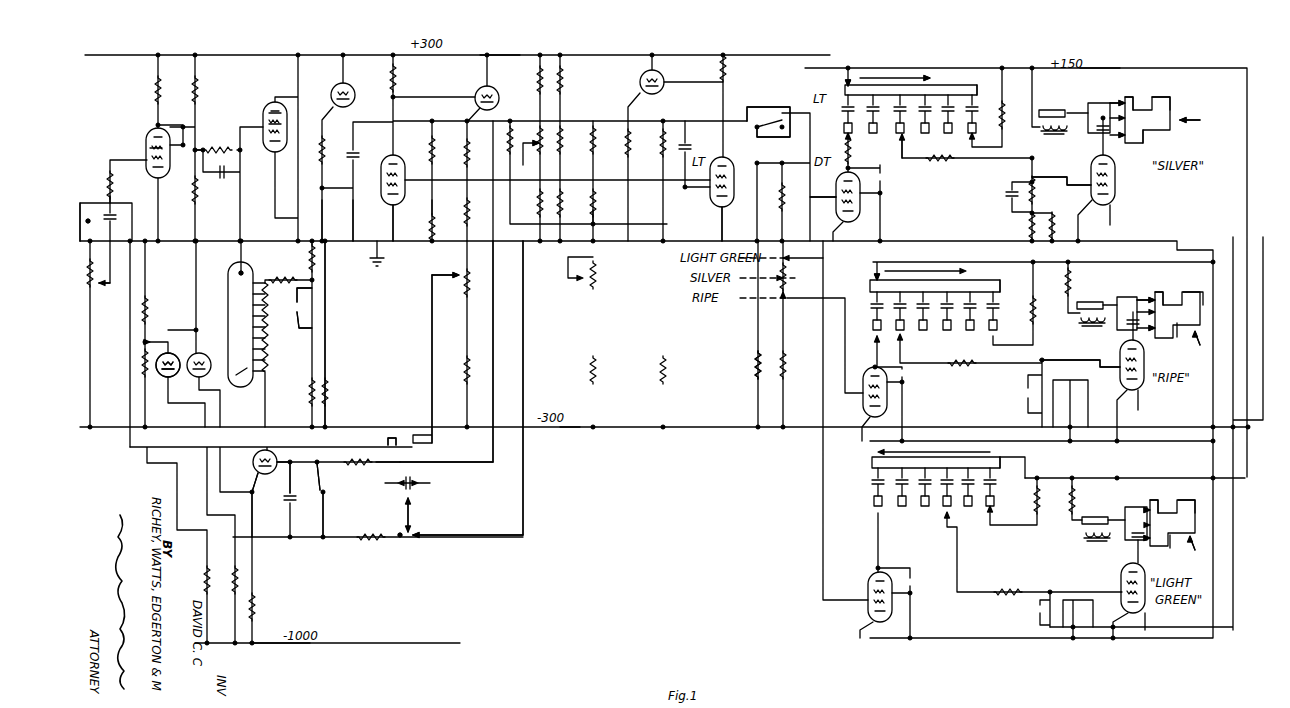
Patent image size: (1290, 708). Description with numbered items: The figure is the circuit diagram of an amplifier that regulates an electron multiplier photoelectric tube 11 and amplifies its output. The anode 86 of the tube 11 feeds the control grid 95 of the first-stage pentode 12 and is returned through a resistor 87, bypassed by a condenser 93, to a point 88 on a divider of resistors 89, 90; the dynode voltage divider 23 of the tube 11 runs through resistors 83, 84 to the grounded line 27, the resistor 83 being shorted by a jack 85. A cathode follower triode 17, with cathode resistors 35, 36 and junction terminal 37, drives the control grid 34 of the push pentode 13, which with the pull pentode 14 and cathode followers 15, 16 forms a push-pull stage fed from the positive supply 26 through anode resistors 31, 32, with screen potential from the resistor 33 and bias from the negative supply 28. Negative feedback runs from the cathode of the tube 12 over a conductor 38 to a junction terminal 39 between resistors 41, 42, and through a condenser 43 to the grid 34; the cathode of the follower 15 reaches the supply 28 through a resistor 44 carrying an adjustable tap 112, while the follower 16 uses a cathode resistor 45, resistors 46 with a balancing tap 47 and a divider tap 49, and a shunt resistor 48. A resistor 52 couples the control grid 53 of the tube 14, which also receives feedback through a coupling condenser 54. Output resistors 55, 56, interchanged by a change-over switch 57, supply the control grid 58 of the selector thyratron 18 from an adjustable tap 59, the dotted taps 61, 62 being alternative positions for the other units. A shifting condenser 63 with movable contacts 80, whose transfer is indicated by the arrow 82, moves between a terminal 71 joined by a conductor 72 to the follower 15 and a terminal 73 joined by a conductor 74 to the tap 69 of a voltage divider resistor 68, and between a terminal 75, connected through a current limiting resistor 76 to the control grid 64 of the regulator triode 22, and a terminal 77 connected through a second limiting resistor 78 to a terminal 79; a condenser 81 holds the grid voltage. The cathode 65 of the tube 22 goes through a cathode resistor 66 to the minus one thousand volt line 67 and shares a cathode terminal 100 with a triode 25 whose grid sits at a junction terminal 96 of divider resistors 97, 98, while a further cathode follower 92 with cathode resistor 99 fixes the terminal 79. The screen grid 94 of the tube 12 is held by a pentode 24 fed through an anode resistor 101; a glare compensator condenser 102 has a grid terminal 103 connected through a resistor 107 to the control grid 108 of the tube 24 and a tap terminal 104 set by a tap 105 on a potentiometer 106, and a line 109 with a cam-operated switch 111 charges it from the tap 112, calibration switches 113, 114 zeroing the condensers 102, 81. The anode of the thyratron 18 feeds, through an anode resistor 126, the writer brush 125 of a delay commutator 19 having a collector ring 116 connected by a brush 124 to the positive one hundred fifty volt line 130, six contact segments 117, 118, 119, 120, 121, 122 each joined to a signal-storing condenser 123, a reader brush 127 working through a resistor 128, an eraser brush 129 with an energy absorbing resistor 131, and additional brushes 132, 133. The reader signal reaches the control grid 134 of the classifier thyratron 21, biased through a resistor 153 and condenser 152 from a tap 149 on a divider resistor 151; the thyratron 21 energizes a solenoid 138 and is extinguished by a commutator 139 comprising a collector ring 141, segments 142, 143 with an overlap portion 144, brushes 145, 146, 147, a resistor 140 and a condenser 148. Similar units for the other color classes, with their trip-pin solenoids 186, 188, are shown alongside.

The electron multiplier photoelectric tube 11 is at (227, 292).
The pentode tube 12 is at (268, 101).
The pentode tube 13 is at (400, 158).
The pentode tube 14 is at (720, 157).
The cathode follower triode 15 is at (495, 91).
The cathode follower triode 16 is at (640, 82).
The cathode follower triode 17 is at (347, 86).
The selector thyratron 18 is at (837, 183).
The commutator 19 is at (907, 78).
The classifier thyratron 21 is at (1092, 168).
The triode vacuum tube 22 is at (253, 462).
The resistor 23 is at (265, 342).
The pentode 24 is at (146, 129).
The triode 25 is at (201, 357).
The positive voltage supply 26 is at (500, 55).
The grounded line 27 is at (325, 254).
The negative supply 28 is at (569, 427).
The anode resistor 31 is at (397, 77).
The anode resistor 32 is at (719, 69).
The resistor 33 is at (562, 150).
The control grid 34 is at (399, 198).
The cathode resistor 35 is at (323, 162).
The cathode resistor 36 is at (331, 388).
The junction terminal 37 is at (326, 198).
The conductor 38 is at (352, 200).
The junction terminal 39 is at (432, 214).
The resistor 41 is at (465, 155).
The resistor 42 is at (436, 228).
The condenser 43 is at (351, 150).
The cathode resistor 44 is at (432, 149).
The cathode resistor 45 is at (624, 145).
The resistors 46 is at (590, 140).
The tap 47 is at (580, 284).
The resistor 48 is at (660, 146).
The voltage divider tap 49 is at (595, 222).
The resistor 52 is at (512, 140).
The control grid 53 is at (725, 205).
The coupling condenser 54 is at (684, 142).
The output resistor 55 is at (758, 334).
The output resistor 56 is at (780, 197).
The change over switch 57 is at (774, 107).
The control grid 58 is at (833, 199).
The adjustable tap 59 is at (785, 278).
The tap 61 is at (800, 259).
The tap 62 is at (787, 298).
The shifting condenser 63 is at (410, 476).
The control grid 64 is at (280, 460).
The cathode 65 is at (270, 481).
The cathode resistor 66 is at (257, 611).
The negative supply line 67 is at (272, 644).
The voltage divider resistor 68 is at (542, 150).
The adjustable tap 69 is at (532, 150).
The terminal 71 is at (418, 464).
The conductor 72 is at (493, 453).
The terminal 73 is at (418, 532).
The conductor 74 is at (523, 470).
The terminal 75 is at (392, 462).
The current limiting resistor 76 is at (358, 459).
The terminal 77 is at (400, 537).
The voltage limiting resistor 78 is at (375, 532).
The terminal 79 is at (248, 523).
The movable contacts 80 is at (407, 486).
The condenser 81 is at (290, 504).
The arrow 82 is at (411, 514).
The resistor 83 is at (297, 278).
The resistor 84 is at (308, 258).
The jack 85 is at (298, 317).
The anode 86 is at (236, 270).
The resistor 87 is at (224, 145).
The point 88 is at (195, 154).
The resistor 89 is at (194, 88).
The resistor 90 is at (193, 192).
The cathode-follower tube 92 is at (172, 377).
The by-pass condenser 93 is at (222, 178).
The screen grid 94 is at (263, 112).
The control grid 95 is at (263, 125).
The junction terminal 96 is at (143, 342).
The voltage-divider resistor 97 is at (147, 308).
The voltage-divider resistor 98 is at (146, 373).
The cathode resistor 99 is at (230, 592).
The cathode terminal 100 is at (251, 491).
The anode resistor 101 is at (156, 87).
The glare compensator condenser 102 is at (114, 220).
The grid terminal 103 is at (111, 195).
The tap terminal 104 is at (88, 222).
The tap 105 is at (97, 277).
The potentiometer 106 is at (92, 288).
The current-limiting resistor 107 is at (112, 180).
The control grid 108 is at (148, 148).
The line 109 is at (430, 354).
The cam-operated switch 111 is at (385, 438).
The adjustable tap 112 is at (462, 284).
The switch 113 is at (83, 203).
The switch 114 is at (325, 487).
The collector ring 116 is at (940, 85).
The contact segment 117 is at (872, 300).
The contact segment 118 is at (896, 300).
The contact segment 119 is at (921, 300).
The contact segment 120 is at (945, 300).
The contact segment 121 is at (968, 300).
The contact segment 122 is at (992, 300).
The signal-storing condensers 123 is at (982, 106).
The contact brush 124 is at (848, 84).
The writer brush 125 is at (847, 135).
The anode resistor 126 is at (847, 151).
The reader brush 127 is at (902, 156).
The resistor 128 is at (939, 159).
The discharge brush 129 is at (975, 135).
The positive supply line 130 is at (1094, 68).
The energy absorbing resistor 131 is at (1010, 128).
The brush 132 is at (903, 340).
The brush 133 is at (948, 521).
The control grid 134 is at (1115, 184).
The solenoid device 138 is at (1049, 110).
The commutator 139 is at (1168, 131).
The resistor 140 is at (1112, 103).
The collector ring 141 is at (1162, 321).
The segment 142 is at (1143, 143).
The segment 143 is at (1161, 97).
The overlap portion 144 is at (1129, 97).
The brush 145 is at (1118, 321).
The brush 146 is at (1121, 137).
The brush 147 is at (1124, 102).
The condenser 148 is at (1103, 136).
The tap 149 is at (1035, 214).
The voltage divider resistor 151 is at (1052, 226).
The condenser 152 is at (1008, 194).
The resistor 153 is at (1035, 188).
The trip-pin solenoid 186 is at (1084, 300).
The trip-pin solenoid 188 is at (1108, 517).